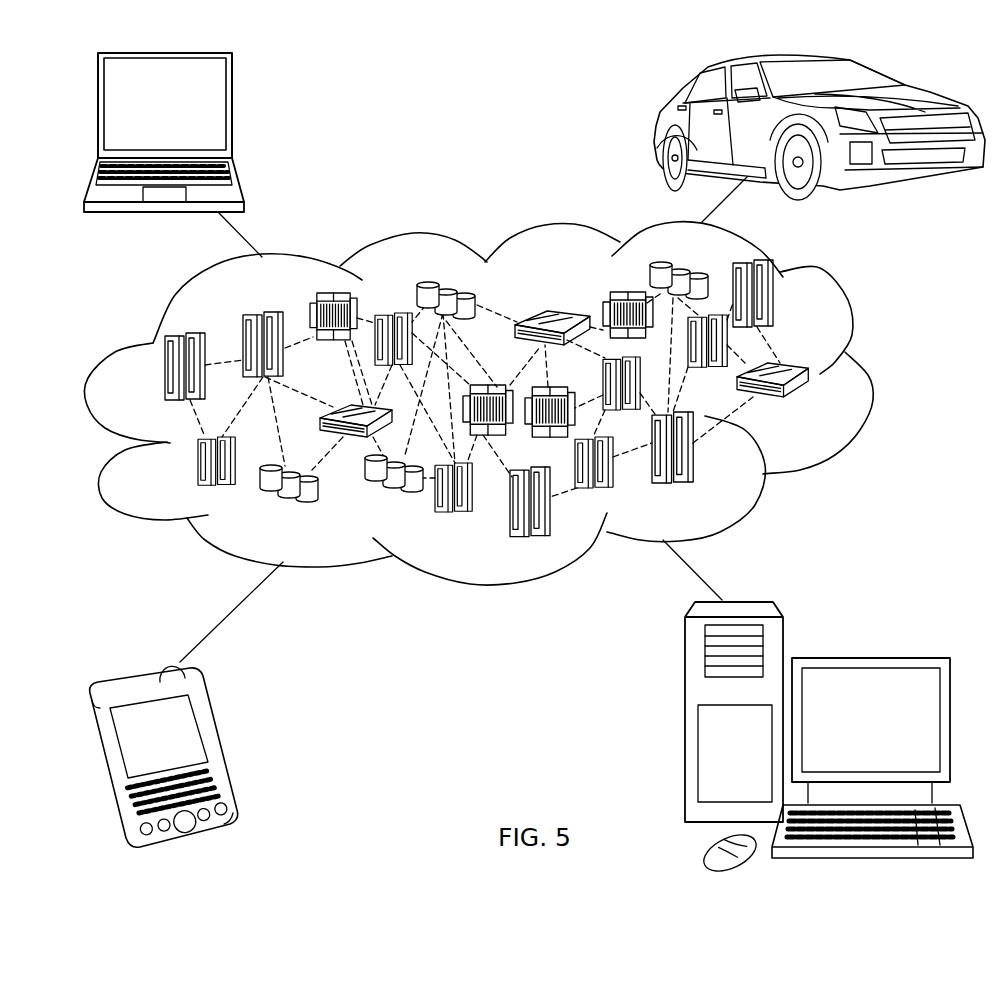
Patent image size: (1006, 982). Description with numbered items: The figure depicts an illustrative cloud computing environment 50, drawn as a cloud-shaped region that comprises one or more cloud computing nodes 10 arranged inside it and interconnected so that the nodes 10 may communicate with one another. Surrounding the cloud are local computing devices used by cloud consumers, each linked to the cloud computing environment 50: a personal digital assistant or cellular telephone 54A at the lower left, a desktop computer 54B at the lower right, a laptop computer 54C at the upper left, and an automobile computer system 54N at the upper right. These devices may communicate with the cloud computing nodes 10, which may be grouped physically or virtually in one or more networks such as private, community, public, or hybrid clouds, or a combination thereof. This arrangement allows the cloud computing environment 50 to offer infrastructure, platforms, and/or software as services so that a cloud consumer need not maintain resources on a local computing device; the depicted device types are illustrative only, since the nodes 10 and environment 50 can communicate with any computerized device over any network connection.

The cloud computing node 10 is at (814, 407).
The cloud computing environment 50 is at (853, 375).
The personal digital assistant (PDA) or cellular telephone 54A is at (222, 752).
The desktop computer 54B is at (867, 657).
The laptop computer 54C is at (232, 112).
The automobile computer system 54N is at (655, 125).